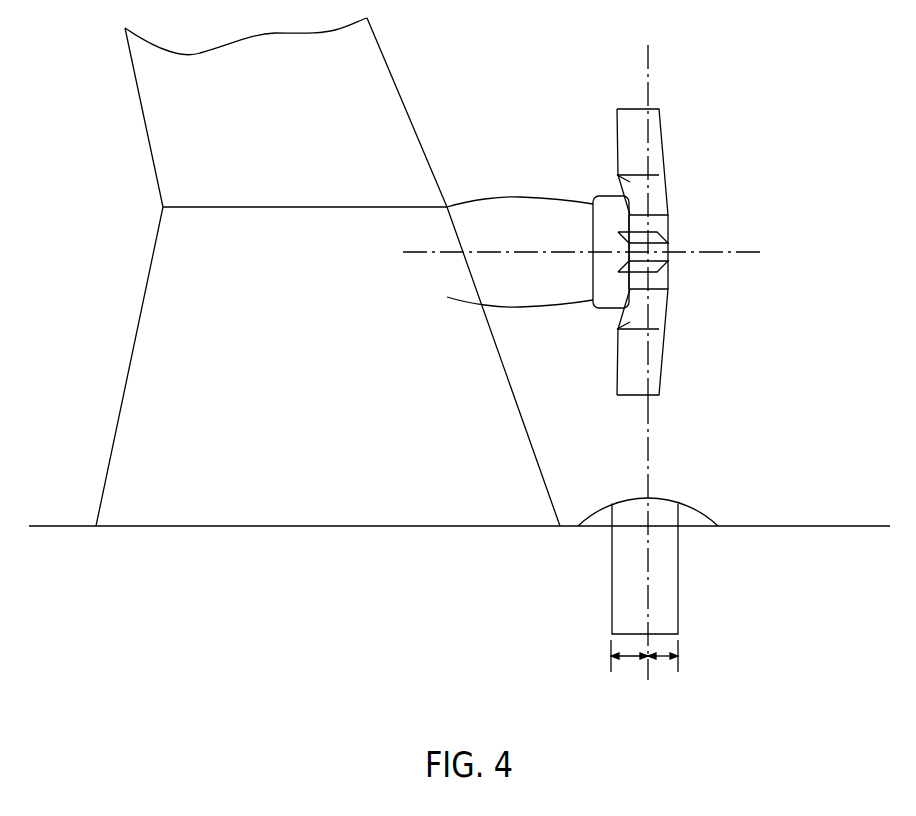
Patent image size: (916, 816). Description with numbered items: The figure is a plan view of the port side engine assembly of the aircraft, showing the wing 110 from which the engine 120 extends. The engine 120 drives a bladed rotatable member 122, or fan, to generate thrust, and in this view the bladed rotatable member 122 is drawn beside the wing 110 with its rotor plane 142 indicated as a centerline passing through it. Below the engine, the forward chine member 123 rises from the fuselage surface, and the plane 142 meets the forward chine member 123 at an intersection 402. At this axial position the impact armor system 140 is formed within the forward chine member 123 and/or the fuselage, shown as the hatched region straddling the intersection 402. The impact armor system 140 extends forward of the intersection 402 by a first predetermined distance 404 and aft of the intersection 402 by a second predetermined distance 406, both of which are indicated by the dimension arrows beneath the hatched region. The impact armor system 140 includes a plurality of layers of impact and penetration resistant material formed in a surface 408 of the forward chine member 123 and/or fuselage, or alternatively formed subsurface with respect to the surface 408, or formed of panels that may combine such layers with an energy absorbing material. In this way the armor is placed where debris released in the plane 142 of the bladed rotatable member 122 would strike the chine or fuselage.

The wing 110 is at (390, 120).
The engine 120 is at (480, 210).
The bladed rotatable member 122 is at (627, 183).
The plane 142 is at (648, 83).
The intersection 402 is at (648, 433).
The impact armor system 140 is at (662, 508).
The forward chine member 123 is at (693, 517).
The surface 408 is at (622, 578).
The second predetermined distance 406 is at (628, 660).
The first predetermined distance 404 is at (663, 660).